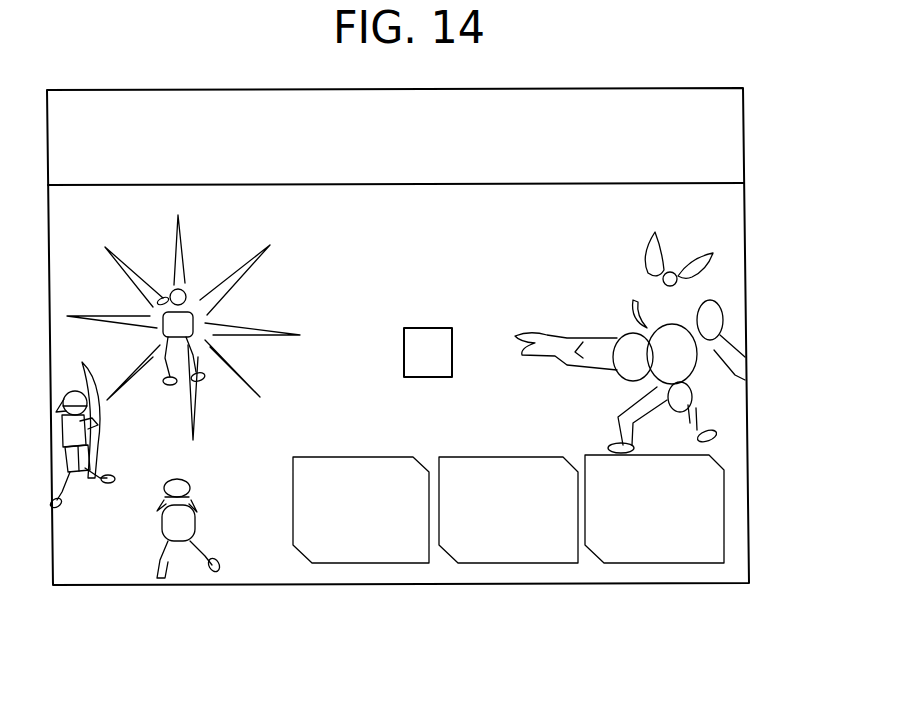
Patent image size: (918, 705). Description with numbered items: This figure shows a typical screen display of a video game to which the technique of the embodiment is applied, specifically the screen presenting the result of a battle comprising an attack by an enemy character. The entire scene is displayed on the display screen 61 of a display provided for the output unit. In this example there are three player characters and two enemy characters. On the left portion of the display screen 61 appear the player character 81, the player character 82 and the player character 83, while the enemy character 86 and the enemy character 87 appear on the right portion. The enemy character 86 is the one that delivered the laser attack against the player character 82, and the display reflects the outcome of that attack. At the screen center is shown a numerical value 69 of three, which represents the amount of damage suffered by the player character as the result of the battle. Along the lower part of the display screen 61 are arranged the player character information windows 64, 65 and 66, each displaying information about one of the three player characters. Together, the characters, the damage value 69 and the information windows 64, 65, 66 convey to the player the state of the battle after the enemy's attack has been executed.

The display screen 61 is at (745, 113).
The player character information window 64 is at (377, 563).
The player character information window 65 is at (510, 563).
The player character information window 66 is at (668, 563).
The numerical value 69 is at (428, 378).
The player character 81 is at (92, 440).
The player character 82 is at (194, 289).
The player character 83 is at (198, 508).
The enemy character 86 is at (688, 390).
The enemy character 87 is at (664, 245).